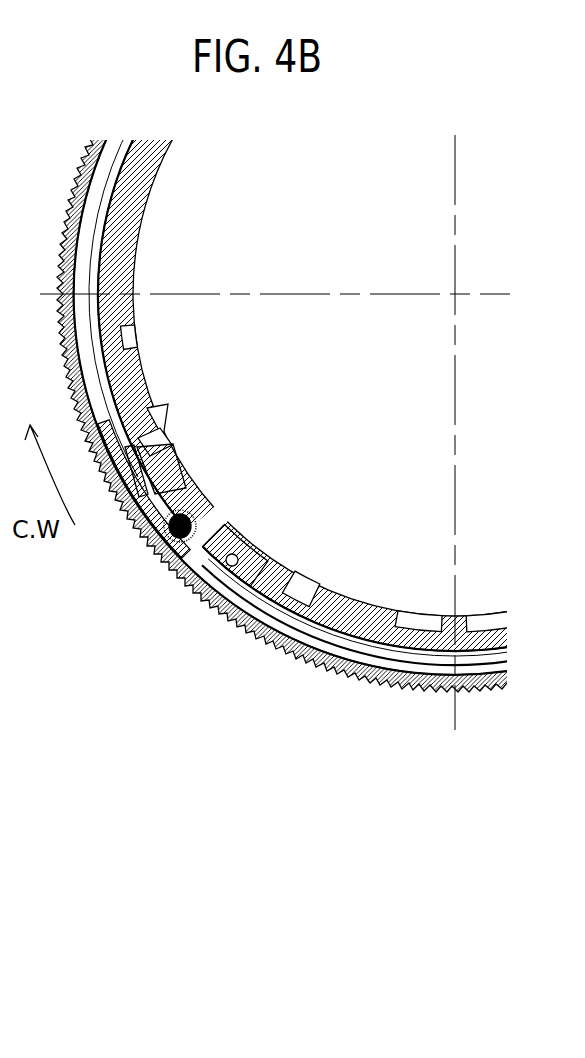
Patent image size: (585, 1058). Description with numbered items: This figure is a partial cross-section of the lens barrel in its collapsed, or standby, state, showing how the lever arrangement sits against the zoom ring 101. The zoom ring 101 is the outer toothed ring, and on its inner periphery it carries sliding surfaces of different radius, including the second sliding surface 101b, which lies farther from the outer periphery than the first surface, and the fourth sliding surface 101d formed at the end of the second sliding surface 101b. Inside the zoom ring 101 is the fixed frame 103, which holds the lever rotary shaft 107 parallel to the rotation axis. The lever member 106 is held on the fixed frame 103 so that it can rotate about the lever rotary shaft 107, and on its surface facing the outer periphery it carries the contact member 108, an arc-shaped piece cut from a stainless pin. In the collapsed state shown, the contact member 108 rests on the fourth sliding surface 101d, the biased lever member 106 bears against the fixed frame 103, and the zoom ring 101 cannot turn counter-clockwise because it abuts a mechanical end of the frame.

The zoom ring 101 is at (347, 678).
The second sliding surface 101b is at (295, 600).
The fourth sliding surface 101d is at (178, 545).
The fixed frame 103 is at (130, 233).
The lever member 106 is at (160, 500).
The lever rotary shaft 107 is at (233, 553).
The contact member 108 is at (155, 548).